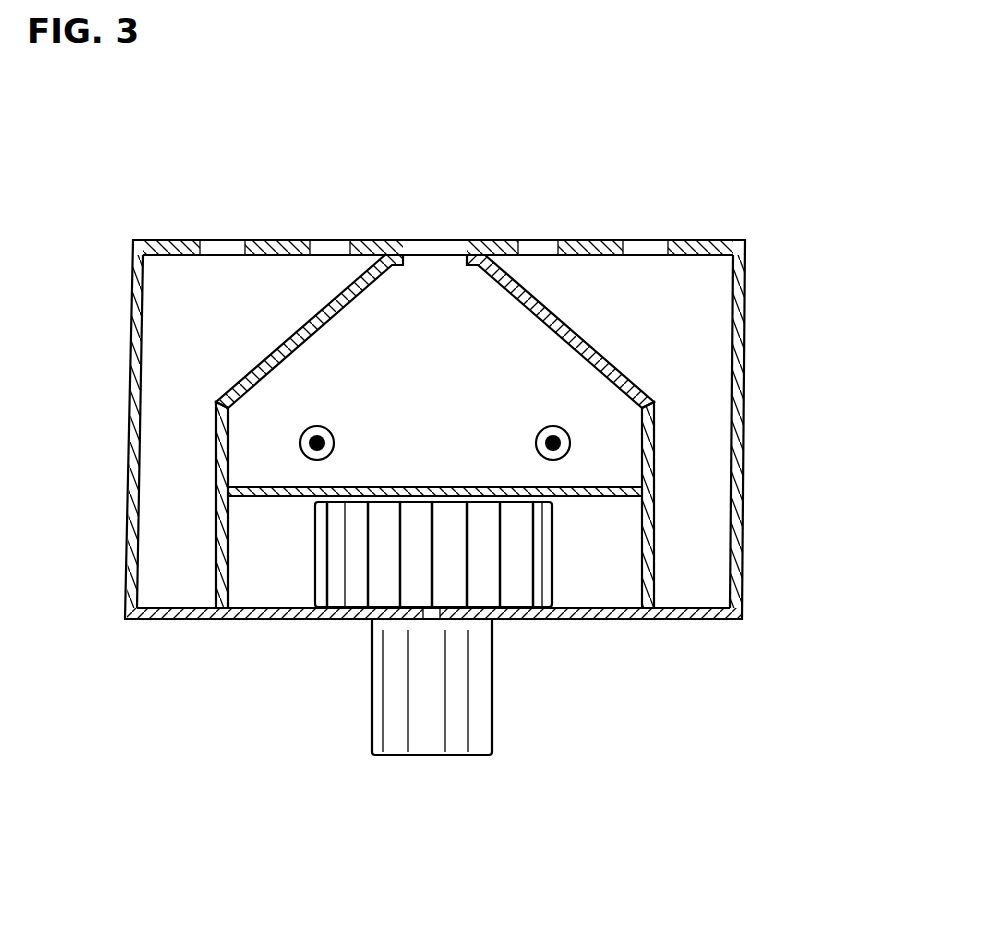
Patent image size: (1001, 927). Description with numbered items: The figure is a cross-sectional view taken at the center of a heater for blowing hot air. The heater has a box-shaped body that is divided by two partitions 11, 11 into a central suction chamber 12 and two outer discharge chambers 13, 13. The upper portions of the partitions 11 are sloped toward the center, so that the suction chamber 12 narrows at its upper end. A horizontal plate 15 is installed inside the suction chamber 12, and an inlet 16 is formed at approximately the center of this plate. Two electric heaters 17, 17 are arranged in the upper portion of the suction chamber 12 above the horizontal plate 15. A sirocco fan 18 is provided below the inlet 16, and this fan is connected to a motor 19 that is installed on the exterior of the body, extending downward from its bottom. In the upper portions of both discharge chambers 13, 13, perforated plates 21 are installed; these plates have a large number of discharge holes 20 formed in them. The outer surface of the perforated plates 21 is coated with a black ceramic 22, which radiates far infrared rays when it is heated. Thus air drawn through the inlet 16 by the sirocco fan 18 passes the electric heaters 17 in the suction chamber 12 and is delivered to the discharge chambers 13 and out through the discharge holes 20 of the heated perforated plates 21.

The partition 11 is at (243, 382).
The suction chamber 12 is at (440, 280).
The discharge chamber 13 is at (178, 287).
The horizontal plate 15 is at (272, 500).
The inlet 16 is at (413, 487).
The electric heater 17 is at (318, 425).
The sirocco fan 18 is at (552, 530).
The motor 19 is at (372, 672).
The discharge hole 20 is at (223, 240).
The perforated plate 21 is at (750, 247).
The black ceramic 22 is at (703, 240).